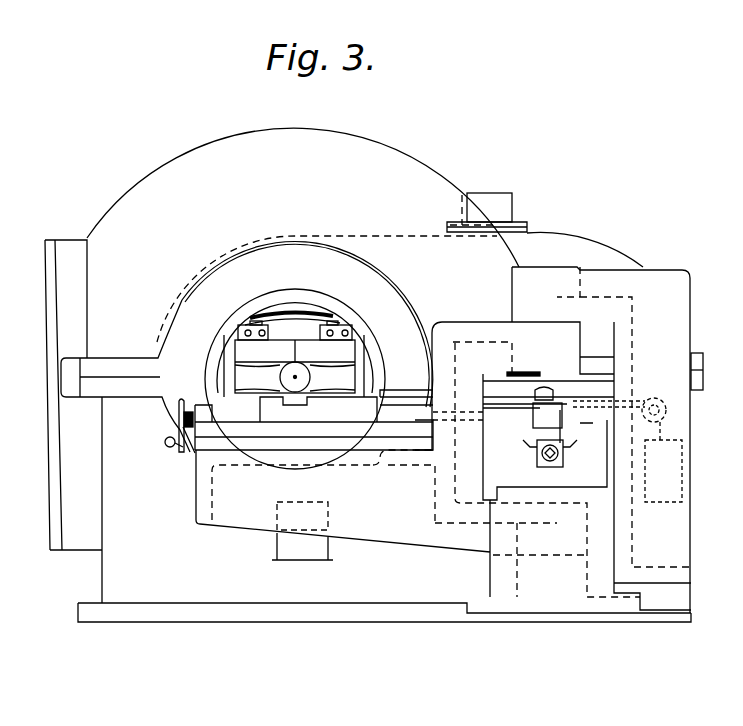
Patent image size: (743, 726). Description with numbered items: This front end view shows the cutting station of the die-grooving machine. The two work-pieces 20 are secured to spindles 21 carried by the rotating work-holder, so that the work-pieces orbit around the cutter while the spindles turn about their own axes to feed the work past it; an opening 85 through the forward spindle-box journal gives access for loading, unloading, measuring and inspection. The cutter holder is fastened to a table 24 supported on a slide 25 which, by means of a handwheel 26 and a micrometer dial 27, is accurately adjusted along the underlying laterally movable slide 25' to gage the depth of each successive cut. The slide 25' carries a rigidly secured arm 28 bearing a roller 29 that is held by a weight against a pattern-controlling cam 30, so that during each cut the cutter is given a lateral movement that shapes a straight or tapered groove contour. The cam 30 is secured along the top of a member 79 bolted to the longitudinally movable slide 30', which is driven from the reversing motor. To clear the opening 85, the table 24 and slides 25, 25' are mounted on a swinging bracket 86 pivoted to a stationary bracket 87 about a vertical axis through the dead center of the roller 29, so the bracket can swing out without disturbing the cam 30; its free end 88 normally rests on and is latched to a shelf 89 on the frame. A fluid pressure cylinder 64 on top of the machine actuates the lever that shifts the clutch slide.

The work-pieces 20 is at (270, 362).
The spindles 21 is at (318, 334).
The table 24 is at (313, 403).
The slide 25 is at (308, 428).
The laterally movable slide 25' is at (403, 469).
The handwheel 26 is at (180, 447).
The micrometer dial 27 is at (183, 400).
The arm 28 is at (518, 414).
The roller 29 is at (568, 421).
The pattern-controlling cam 30 is at (572, 423).
The longitudinally movable slide 30' is at (527, 457).
The fluid pressure cylinder 64 is at (497, 195).
The member 79 is at (582, 433).
The opening 85 is at (312, 310).
The swinging bracket 86 is at (552, 356).
The stationary bracket 87 is at (688, 330).
The free end 88 is at (208, 494).
The shelf 89 is at (323, 552).